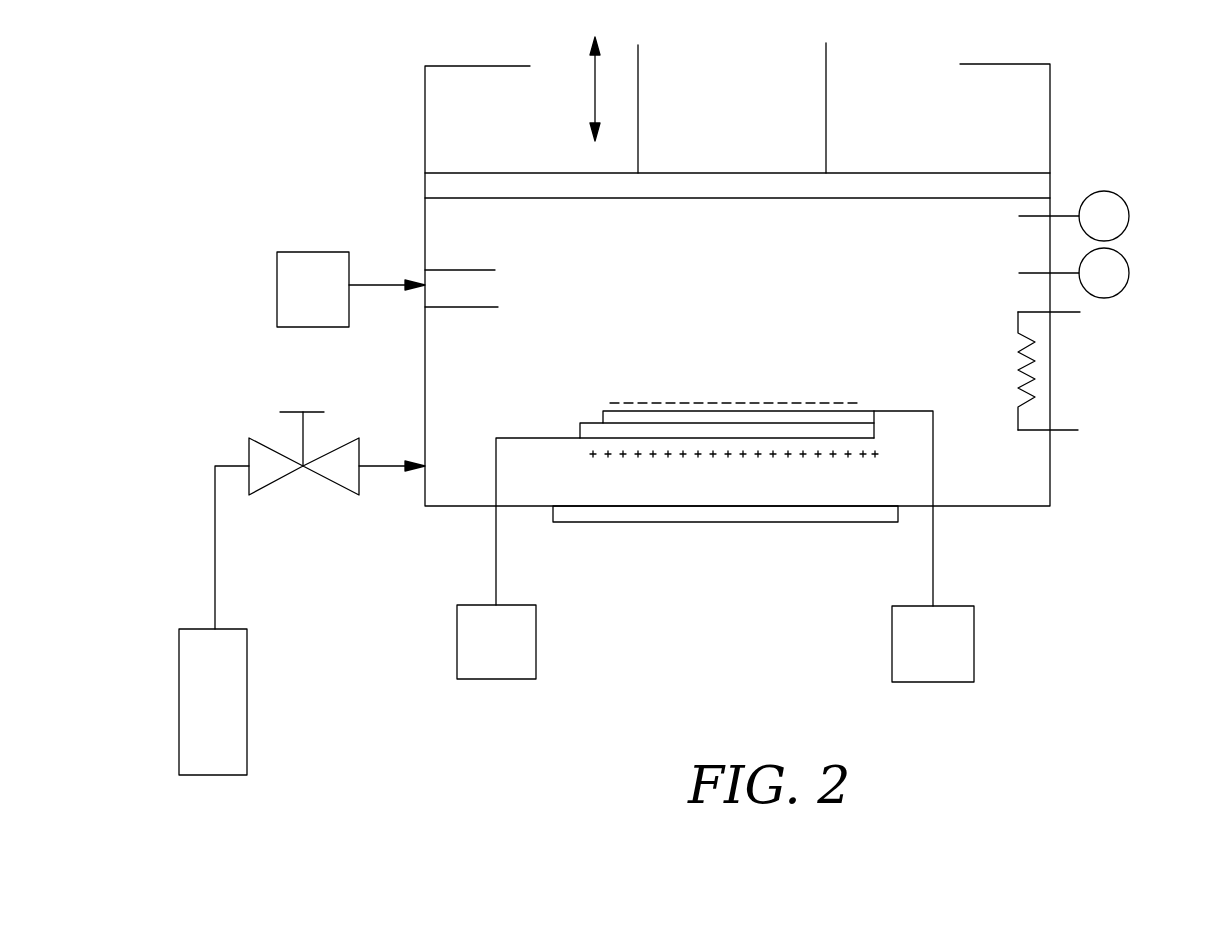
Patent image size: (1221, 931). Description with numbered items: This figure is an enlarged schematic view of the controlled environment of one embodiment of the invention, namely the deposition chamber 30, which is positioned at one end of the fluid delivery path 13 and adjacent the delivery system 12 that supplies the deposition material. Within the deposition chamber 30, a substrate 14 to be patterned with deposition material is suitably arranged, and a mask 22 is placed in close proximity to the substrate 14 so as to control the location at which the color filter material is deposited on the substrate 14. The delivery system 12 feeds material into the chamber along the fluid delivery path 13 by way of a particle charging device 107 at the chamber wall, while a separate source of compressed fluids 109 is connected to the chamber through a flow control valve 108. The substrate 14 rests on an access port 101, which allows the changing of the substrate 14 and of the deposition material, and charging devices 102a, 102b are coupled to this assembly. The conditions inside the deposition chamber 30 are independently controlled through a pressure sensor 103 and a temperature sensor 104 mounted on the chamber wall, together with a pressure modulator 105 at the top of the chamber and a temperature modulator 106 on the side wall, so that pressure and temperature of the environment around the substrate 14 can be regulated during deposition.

The delivery system 12 is at (307, 250).
The fluid delivery path 13 is at (385, 283).
The substrate 14 is at (669, 425).
The mask 22 is at (875, 409).
The deposition chamber or controlled environment 30 is at (1030, 470).
The access port 101 is at (758, 512).
The charging device 102a is at (536, 654).
The charging device 102b is at (974, 634).
The pressure sensor 103 is at (1122, 197).
The temperature sensor 104 is at (1128, 268).
The pressure modulator 105 is at (747, 180).
The temperature modulator 106 is at (1045, 378).
The particle charging device 107 is at (470, 308).
The flow control valve 108 is at (268, 450).
The source of compressed fluids 109 is at (235, 680).